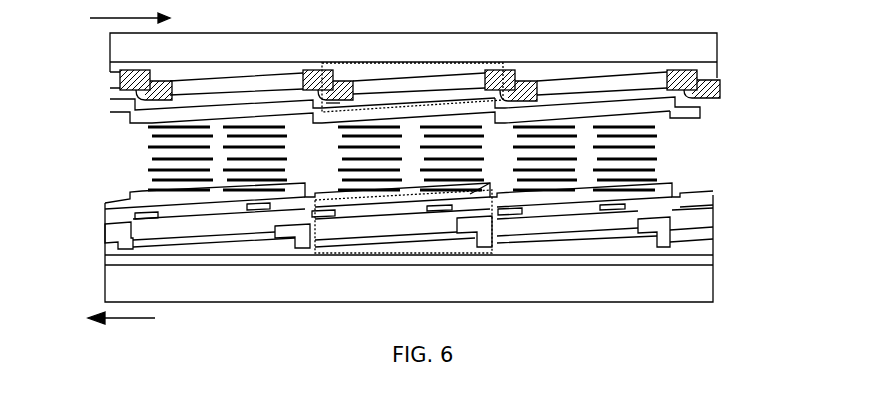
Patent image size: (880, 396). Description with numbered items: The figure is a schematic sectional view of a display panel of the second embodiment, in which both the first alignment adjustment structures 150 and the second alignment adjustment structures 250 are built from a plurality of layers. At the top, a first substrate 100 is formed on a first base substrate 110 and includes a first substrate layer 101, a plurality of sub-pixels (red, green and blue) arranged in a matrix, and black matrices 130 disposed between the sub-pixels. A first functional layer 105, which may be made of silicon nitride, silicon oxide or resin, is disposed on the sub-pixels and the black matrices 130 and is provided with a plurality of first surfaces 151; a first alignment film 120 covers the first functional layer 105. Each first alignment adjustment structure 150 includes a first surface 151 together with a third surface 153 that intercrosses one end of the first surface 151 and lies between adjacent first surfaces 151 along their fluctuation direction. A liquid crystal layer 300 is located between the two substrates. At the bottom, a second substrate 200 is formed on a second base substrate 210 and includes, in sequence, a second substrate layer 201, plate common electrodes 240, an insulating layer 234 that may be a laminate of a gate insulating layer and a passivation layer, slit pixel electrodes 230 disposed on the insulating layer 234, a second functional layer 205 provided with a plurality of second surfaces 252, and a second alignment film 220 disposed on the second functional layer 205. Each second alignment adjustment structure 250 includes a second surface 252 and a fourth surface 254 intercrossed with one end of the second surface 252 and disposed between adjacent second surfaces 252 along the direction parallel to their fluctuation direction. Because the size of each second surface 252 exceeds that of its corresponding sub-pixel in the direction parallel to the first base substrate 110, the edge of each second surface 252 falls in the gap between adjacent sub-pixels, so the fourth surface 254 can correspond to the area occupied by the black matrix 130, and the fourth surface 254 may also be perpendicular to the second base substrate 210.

The first substrate 100 is at (713, 33).
The first base substrate 110 is at (523, 52).
The first substrate layer 101 is at (610, 67).
The black matrix 130 is at (670, 72).
The first alignment adjustment structure 150 is at (398, 62).
The first surface 151 is at (428, 102).
The third surface 153 is at (326, 103).
The first functional layer 105 is at (690, 100).
The first alignment film 120 is at (653, 100).
The liquid crystal layer 300 is at (655, 143).
The second substrate 200 is at (633, 302).
The second base substrate 210 is at (672, 283).
The second substrate layer 201 is at (685, 248).
The second functional layer 205 is at (700, 212).
The second alignment film 220 is at (688, 197).
The slit pixel electrode 230 is at (607, 207).
The insulating layer 234 is at (510, 225).
The plate common electrode 240 is at (538, 237).
The second alignment adjustment structure 250 is at (310, 247).
The second surface 252 is at (380, 198).
The fourth surface 254 is at (483, 195).